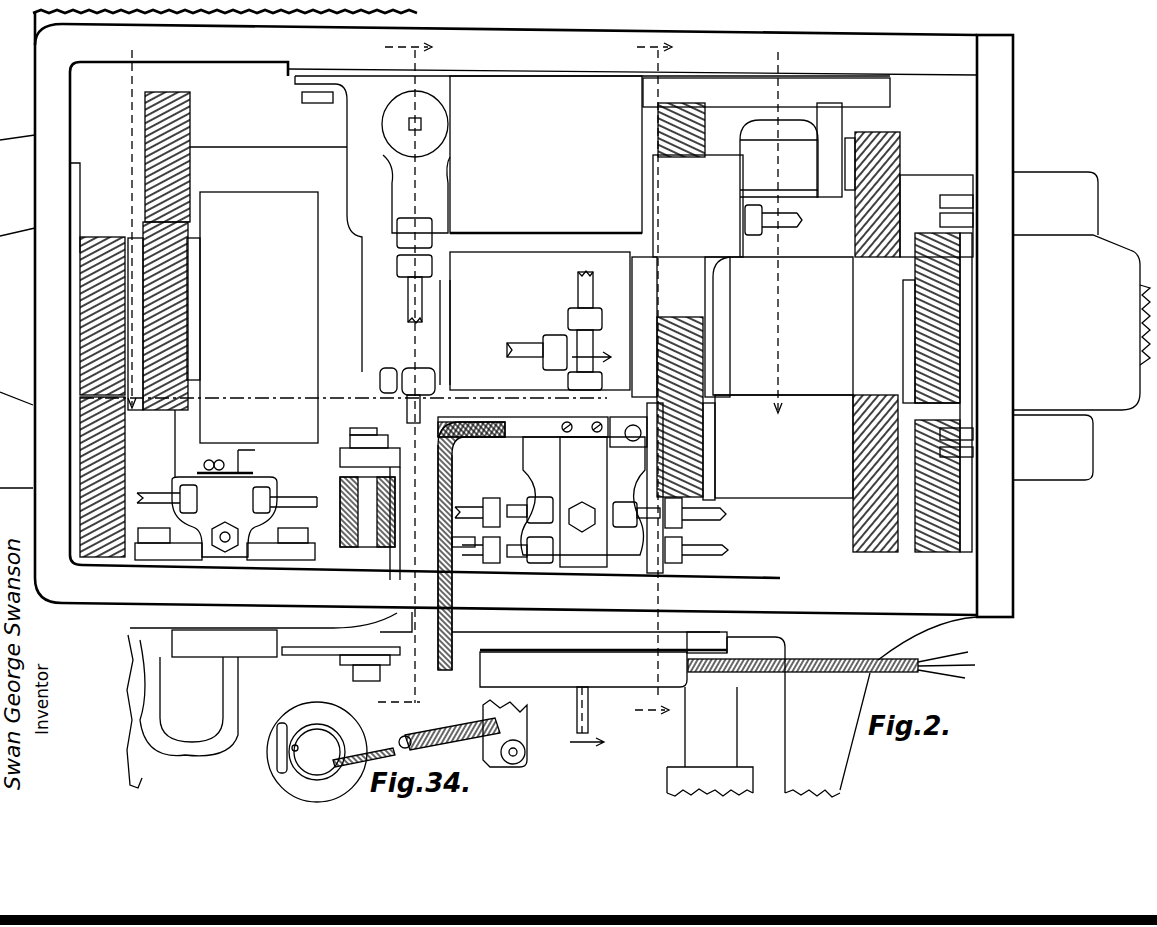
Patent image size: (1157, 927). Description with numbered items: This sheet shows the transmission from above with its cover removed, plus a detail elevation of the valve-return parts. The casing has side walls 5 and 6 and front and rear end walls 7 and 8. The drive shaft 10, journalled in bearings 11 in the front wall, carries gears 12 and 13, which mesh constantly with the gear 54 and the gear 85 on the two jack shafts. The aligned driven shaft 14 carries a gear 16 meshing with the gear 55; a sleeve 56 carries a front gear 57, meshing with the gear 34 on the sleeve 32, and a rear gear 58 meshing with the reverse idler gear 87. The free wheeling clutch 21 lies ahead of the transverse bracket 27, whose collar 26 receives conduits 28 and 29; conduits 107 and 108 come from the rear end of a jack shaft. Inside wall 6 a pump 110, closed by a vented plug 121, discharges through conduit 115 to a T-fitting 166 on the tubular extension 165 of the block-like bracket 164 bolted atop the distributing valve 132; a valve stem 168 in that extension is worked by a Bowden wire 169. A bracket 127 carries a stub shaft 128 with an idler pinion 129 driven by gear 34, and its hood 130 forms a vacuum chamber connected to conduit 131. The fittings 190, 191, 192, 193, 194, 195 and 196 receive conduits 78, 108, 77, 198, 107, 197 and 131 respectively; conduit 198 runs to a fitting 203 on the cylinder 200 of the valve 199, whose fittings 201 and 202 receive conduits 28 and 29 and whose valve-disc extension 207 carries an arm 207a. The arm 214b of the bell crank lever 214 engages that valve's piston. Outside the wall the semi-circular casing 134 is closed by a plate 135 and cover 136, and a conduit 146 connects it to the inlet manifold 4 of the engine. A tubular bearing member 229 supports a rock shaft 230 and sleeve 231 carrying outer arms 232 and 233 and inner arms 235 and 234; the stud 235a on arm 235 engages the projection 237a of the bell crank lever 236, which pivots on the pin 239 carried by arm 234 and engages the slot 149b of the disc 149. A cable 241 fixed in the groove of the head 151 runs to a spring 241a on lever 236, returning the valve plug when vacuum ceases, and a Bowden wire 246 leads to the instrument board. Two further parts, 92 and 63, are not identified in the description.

In FIG. 2, the side wall 6 is at (568, 40).
In FIG. 2, the front end wall 7 is at (50, 117).
In FIG. 2, the rear end wall 8 is at (1020, 103).
In FIG. 2, the drive shaft 10 is at (9, 298).
In FIG. 2, the side wall 5 is at (394, 373).
In FIG. 2, the inlet manifold 4 is at (642, 379).
In FIG. 2, the gear 85 is at (190, 114).
In FIG. 2, the gear 13 is at (160, 383).
In FIG. 2, the gear 12 is at (100, 252).
In FIG. 2, the gear 54 is at (103, 445).
In FIG. 2, the overrunning or free wheeling clutch 21 is at (272, 207).
In FIG. 2, the shelf plate 92 is at (280, 160).
In FIG. 2, the bracket 27 is at (355, 127).
In FIG. 2, the pump 110 is at (521, 90).
In FIG. 2, the vented plug 121 is at (437, 127).
In FIG. 2, the conduit 115 is at (408, 293).
In FIG. 2, the collar 26 is at (423, 345).
In FIG. 2, the T-fitting 166 is at (575, 335).
In FIG. 2, the conduit 197 is at (528, 350).
In FIG. 2, the bearings 11 is at (593, 349).
In FIG. 34, the bearings 11 is at (587, 753).
In FIG. 2, the tubular extension 165 is at (570, 397).
In FIG. 2, the bell crank lever 236 is at (500, 406).
In FIG. 34, the bell crank lever 236 is at (531, 723).
In FIG. 2, the spring 241a is at (477, 422).
In FIG. 34, the spring 241a is at (490, 720).
In FIG. 2, the Bowden wire 169 is at (470, 440).
In FIG. 2, the valve stem 168 is at (618, 437).
In FIG. 2, the block-like bracket 164 is at (568, 470).
In FIG. 2, the fitting 192 is at (520, 505).
In FIG. 2, the fitting 195 is at (540, 560).
In FIG. 2, the fitting 193 is at (470, 507).
In FIG. 2, the fitting 196 is at (492, 560).
In FIG. 2, the conduit 198 is at (228, 518).
In FIG. 2, the fitting 191 is at (622, 505).
In FIG. 2, the fitting 190 is at (700, 514).
In FIG. 2, the fitting 194 is at (705, 552).
In FIG. 2, the distributing valve 132 is at (655, 558).
In FIG. 2, the gear 57 is at (705, 497).
In FIG. 2, the conduit 28 is at (385, 395).
In FIG. 2, the conduit 29 is at (423, 408).
In FIG. 2, the projection 237a is at (352, 431).
In FIG. 2, the stud 235a is at (360, 428).
In FIG. 2, the arm 235 is at (355, 440).
In FIG. 2, the arm 234 is at (340, 457).
In FIG. 2, the rock shaft 230 is at (365, 517).
In FIG. 2, the rock shaft sleeve 231 is at (352, 535).
In FIG. 2, the tubular bearing member 229 is at (372, 560).
In FIG. 2, the arm 207a is at (209, 458).
In FIG. 2, the axial extension 207 is at (234, 460).
In FIG. 2, the shaft 63 is at (193, 460).
In FIG. 2, the fitting 201 is at (195, 503).
In FIG. 2, the fitting 202 is at (258, 496).
In FIG. 2, the fitting 203 is at (222, 557).
In FIG. 2, the valve 199 is at (270, 556).
In FIG. 2, the Bowden wire 246 is at (455, 622).
In FIG. 2, the bracket 127 is at (742, 113).
In FIG. 2, the idler pinion 129 is at (672, 135).
In FIG. 2, the hood 130 is at (680, 208).
In FIG. 2, the stub shaft 128 is at (800, 173).
In FIG. 2, the conduit 131 is at (797, 218).
In FIG. 2, the reverse idler gear 87 is at (900, 156).
In FIG. 2, the conduit 108 is at (958, 201).
In FIG. 2, the conduit 107 is at (958, 220).
In FIG. 2, the gear 34 is at (690, 371).
In FIG. 2, the sleeve 32 is at (803, 393).
In FIG. 2, the sleeve 56 is at (803, 487).
In FIG. 2, the gear 58 is at (875, 530).
In FIG. 2, the gear 16 is at (925, 320).
In FIG. 2, the gear 55 is at (938, 530).
In FIG. 2, the conduit 77 is at (955, 434).
In FIG. 2, the conduit 78 is at (960, 451).
In FIG. 2, the driven shaft 14 is at (1145, 350).
In FIG. 2, the cylinder 200 is at (200, 645).
In FIG. 2, the bell crank lever 214 is at (143, 740).
In FIG. 2, the arm 214b is at (228, 665).
In FIG. 2, the arm 233 is at (330, 650).
In FIG. 2, the arm 232 is at (358, 668).
In FIG. 2, the cover 136 is at (675, 678).
In FIG. 2, the conduit 146 is at (600, 722).
In FIG. 2, the casing 134 is at (760, 623).
In FIG. 2, the plate 135 is at (760, 648).
In FIG. 34, the disc 149 is at (285, 780).
In FIG. 34, the head 151 is at (318, 735).
In FIG. 34, the slot 149b is at (278, 752).
In FIG. 34, the cable 241 is at (370, 750).
In FIG. 34, the pin 239 is at (524, 752).